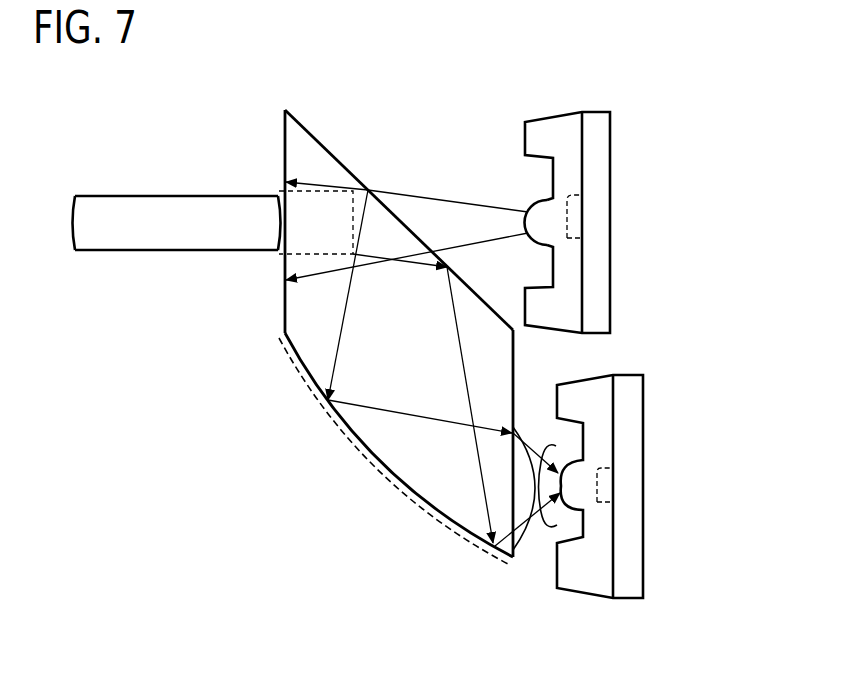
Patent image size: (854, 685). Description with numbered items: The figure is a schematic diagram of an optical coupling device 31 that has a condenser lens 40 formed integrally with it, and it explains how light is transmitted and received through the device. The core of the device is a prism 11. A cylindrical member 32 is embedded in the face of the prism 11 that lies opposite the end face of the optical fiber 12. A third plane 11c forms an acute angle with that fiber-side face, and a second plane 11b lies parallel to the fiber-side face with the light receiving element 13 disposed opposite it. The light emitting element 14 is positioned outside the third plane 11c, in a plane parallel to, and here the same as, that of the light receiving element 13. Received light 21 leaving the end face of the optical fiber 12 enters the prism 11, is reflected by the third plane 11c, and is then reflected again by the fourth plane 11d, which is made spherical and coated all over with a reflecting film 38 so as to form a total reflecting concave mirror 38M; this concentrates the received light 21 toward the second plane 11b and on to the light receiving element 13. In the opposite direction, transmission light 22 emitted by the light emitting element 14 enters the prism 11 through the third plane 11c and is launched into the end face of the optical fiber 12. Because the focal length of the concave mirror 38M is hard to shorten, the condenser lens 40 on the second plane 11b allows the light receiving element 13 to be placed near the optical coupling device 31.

The optical fiber 12 is at (145, 195).
The optical coupling device 31 is at (315, 115).
The prism 11 is at (307, 320).
The second plane 11b is at (514, 353).
The third plane 11c is at (338, 157).
The fourth plane 11d is at (382, 473).
The cylindrical member 32 is at (313, 243).
The reflecting film 38 is at (342, 437).
The total reflecting concave mirror 38M is at (428, 506).
The transmission light 22 is at (481, 248).
The light emitting element 14 is at (582, 195).
The light receiving element 13 is at (614, 462).
The received light 21 is at (557, 535).
The condenser lens 40 is at (517, 546).